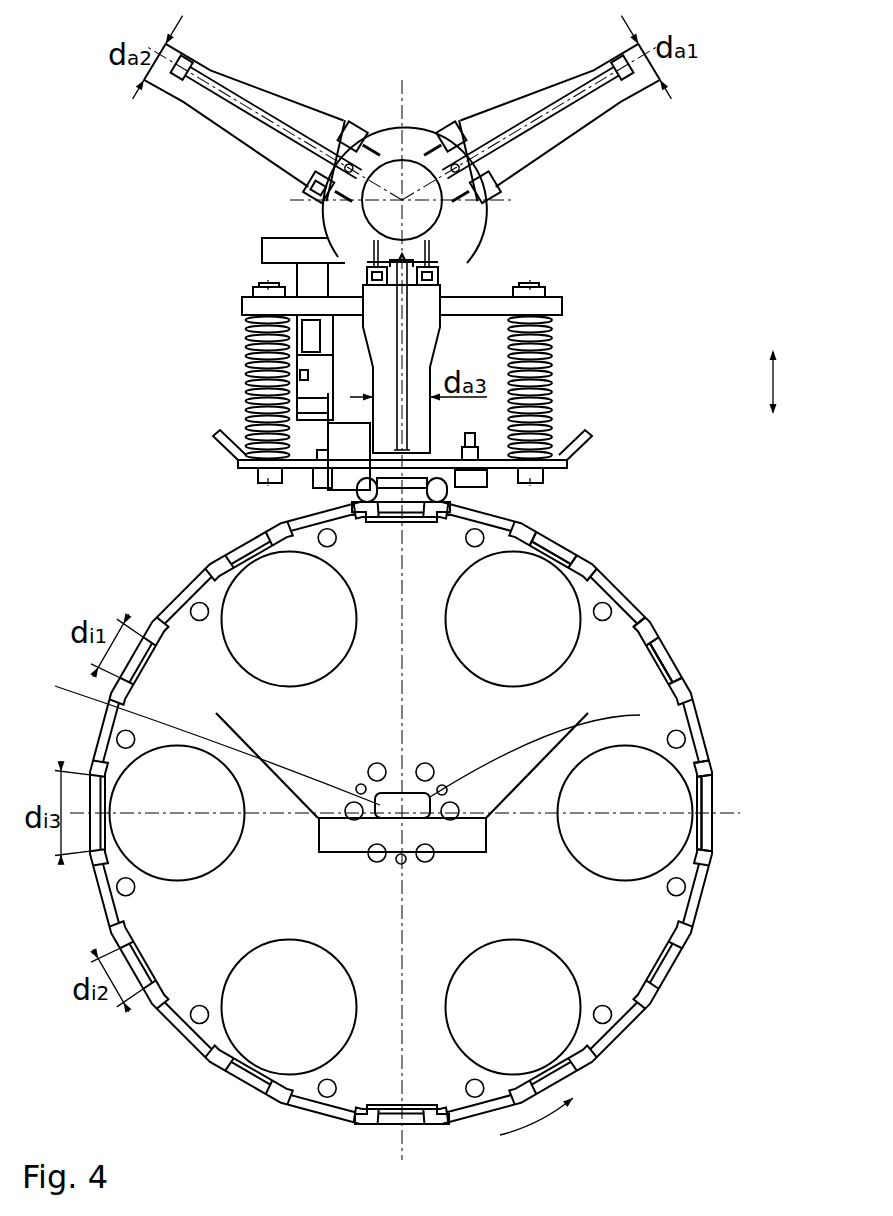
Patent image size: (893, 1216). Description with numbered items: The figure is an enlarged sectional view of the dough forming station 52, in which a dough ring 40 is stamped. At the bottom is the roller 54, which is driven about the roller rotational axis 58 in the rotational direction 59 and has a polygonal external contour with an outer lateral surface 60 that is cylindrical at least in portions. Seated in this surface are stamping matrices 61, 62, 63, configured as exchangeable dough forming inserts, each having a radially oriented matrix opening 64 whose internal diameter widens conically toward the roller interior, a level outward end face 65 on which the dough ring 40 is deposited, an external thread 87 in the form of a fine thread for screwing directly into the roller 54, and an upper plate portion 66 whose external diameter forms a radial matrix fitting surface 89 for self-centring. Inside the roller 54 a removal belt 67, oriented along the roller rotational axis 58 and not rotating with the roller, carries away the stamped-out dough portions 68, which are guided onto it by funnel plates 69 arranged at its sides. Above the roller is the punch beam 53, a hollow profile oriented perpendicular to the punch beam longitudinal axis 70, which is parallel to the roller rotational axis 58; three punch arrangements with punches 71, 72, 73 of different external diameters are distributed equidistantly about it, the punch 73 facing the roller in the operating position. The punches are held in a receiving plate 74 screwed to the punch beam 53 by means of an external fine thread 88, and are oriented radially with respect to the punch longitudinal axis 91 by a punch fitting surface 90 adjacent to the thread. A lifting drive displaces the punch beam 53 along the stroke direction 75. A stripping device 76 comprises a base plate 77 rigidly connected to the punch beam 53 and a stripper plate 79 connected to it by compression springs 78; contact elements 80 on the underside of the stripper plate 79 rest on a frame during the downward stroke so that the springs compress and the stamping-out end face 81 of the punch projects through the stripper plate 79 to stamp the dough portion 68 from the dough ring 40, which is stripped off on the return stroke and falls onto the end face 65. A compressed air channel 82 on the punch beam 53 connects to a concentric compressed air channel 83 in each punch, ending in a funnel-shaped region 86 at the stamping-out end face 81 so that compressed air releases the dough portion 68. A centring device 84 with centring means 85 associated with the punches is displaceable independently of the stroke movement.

The dough ring 40 is at (360, 505).
The dough forming station 52 is at (393, 394).
The punch beam 53 is at (478, 228).
The roller 54 is at (683, 643).
The roller rotational axis 58 is at (640, 715).
The rotational direction 59 is at (330, 1142).
The outer lateral surface 60 is at (708, 887).
The stamping matrix 61 is at (590, 535).
The stamping matrix 62 is at (681, 667).
The stamping matrix 63 is at (716, 797).
The matrix opening 64 is at (577, 542).
The end face 65 is at (716, 772).
The upper plate portion 66 is at (648, 620).
The removal belt 67 is at (473, 830).
The stamped-out dough portion 68 is at (216, 713).
The funnel plate 69 is at (201, 738).
The punch beam longitudinal axis 70 is at (408, 188).
The punch 71 is at (577, 123).
The punch 72 is at (237, 74).
The punch 73 is at (422, 415).
The receiving plate 74 is at (365, 148).
The stroke direction 75 is at (773, 393).
The stripping device 76 is at (190, 372).
The base plate 77 is at (260, 303).
The compression spring 78 is at (250, 347).
The stripper plate 79 is at (215, 448).
The contact element 80 is at (345, 490).
The stamping-out end face 81 is at (165, 83).
The compressed air channel 82 is at (346, 120).
The compressed air channel 83 is at (248, 102).
The centring device 84 is at (242, 273).
The centring means 85 is at (300, 415).
The funnel-shaped region 86 is at (618, 62).
The external thread 87 is at (641, 618).
The external fine thread 88 is at (330, 200).
The matrix fitting surface 89 is at (580, 478).
The punch fitting surface 90 is at (318, 184).
The punch longitudinal axis 91 is at (262, 108).